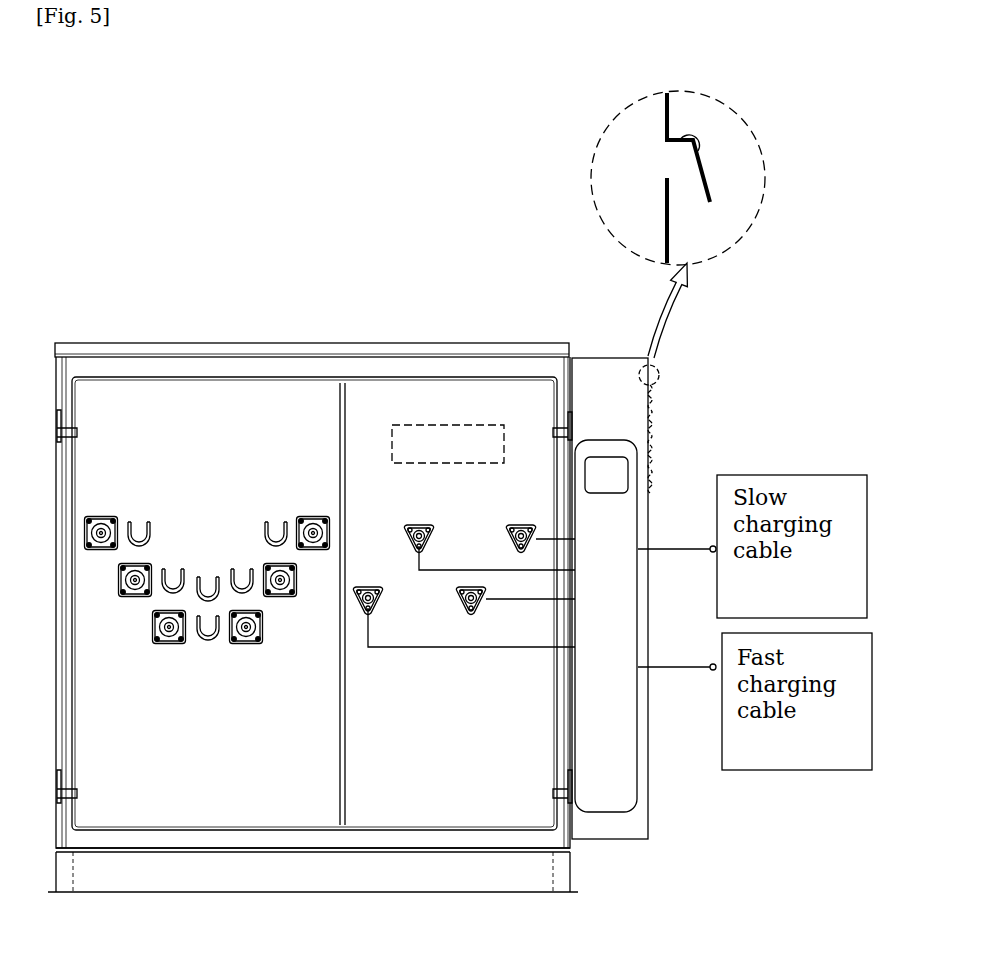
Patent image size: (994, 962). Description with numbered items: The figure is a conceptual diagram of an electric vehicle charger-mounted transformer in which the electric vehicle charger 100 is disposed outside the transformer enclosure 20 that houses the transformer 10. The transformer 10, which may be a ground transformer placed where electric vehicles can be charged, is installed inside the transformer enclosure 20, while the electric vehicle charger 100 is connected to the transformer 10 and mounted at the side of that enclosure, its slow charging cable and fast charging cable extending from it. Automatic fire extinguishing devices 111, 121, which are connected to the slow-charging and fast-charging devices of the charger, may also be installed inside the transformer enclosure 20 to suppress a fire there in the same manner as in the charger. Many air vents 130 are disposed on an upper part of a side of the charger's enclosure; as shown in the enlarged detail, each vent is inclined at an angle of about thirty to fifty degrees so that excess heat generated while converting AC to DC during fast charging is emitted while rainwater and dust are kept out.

The transformer 10 is at (490, 309).
The transformer enclosure 20 is at (304, 343).
The electric vehicle charger 100 is at (612, 359).
The automatic fire extinguishing device 111 is at (448, 382).
The automatic fire extinguishing device 121 is at (407, 425).
The air vents 130 is at (713, 162).